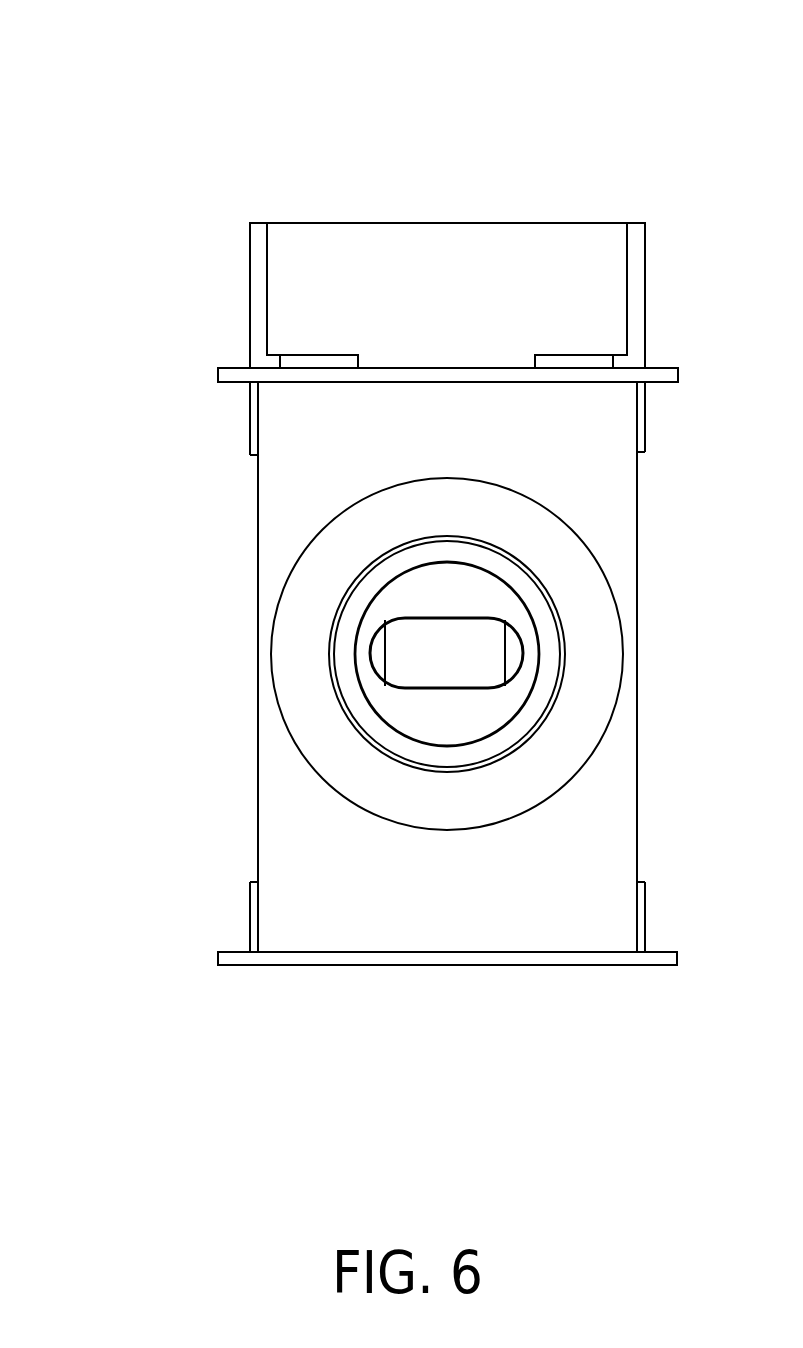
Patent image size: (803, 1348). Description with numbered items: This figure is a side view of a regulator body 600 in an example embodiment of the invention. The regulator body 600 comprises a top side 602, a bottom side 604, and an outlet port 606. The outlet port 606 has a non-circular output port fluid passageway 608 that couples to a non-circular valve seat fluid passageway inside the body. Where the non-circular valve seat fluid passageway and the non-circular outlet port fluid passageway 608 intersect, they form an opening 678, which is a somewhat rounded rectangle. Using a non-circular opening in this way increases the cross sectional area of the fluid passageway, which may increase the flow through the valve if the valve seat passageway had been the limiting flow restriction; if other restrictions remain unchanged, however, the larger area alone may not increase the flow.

The regulator body 600 is at (118, 86).
The top side 602 is at (320, 223).
The bottom side 604 is at (335, 965).
The outlet port 606 is at (385, 718).
The non-circular output port fluid passageway 608 is at (410, 620).
The opening 678 is at (380, 653).